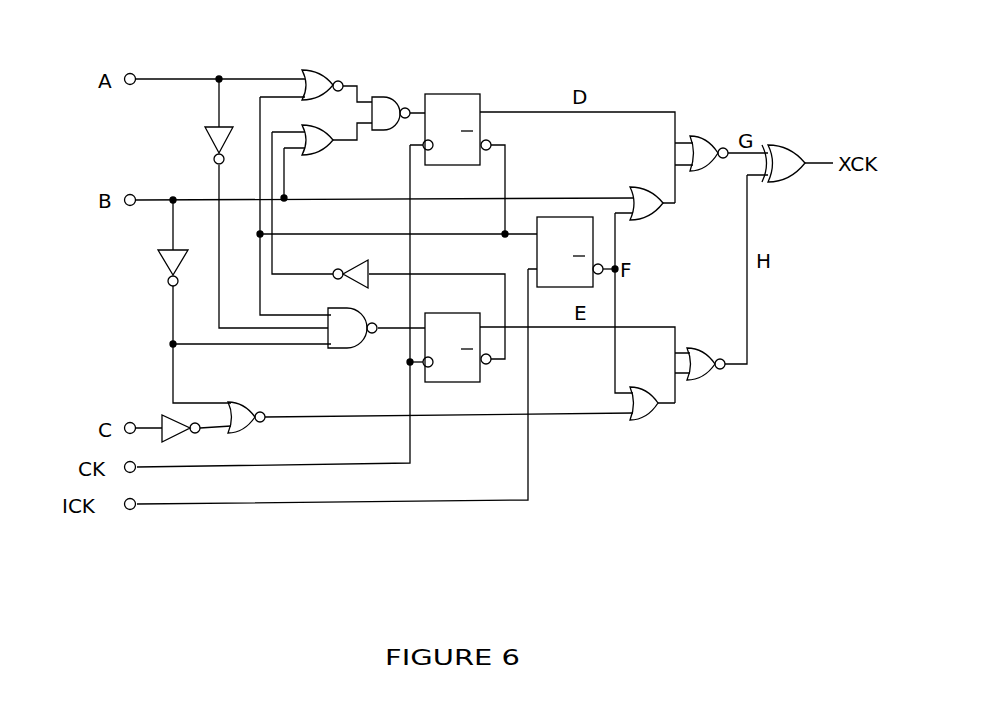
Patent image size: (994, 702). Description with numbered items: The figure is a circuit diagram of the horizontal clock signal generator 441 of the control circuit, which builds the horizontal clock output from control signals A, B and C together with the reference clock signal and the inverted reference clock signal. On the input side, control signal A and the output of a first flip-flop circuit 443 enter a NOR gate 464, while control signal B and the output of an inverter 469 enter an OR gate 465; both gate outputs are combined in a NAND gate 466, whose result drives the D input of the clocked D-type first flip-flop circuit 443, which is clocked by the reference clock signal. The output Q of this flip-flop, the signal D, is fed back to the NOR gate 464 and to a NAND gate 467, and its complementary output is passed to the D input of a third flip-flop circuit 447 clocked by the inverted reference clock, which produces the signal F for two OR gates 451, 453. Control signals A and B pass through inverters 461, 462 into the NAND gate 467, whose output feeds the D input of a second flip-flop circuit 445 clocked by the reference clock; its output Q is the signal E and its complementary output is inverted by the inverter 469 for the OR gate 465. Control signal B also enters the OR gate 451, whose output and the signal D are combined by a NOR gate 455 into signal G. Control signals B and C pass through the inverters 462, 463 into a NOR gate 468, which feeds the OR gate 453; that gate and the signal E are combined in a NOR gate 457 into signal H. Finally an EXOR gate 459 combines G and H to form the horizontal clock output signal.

The horizontal clock signal generator 441 is at (565, 57).
The first flip-flop circuit 443 is at (450, 94).
The second flip-flop circuit 445 is at (443, 393).
The third flip-flop circuit 447 is at (557, 300).
The OR gate 451 is at (643, 182).
The OR gate 453 is at (643, 420).
The NOR gate 455 is at (705, 137).
The NOR gate 457 is at (702, 377).
The EXOR gate 459 is at (788, 147).
The inverter 461 is at (202, 137).
The inverter 462 is at (160, 265).
The inverter 463 is at (163, 417).
The NOR gate 464 is at (317, 67).
The OR gate 465 is at (320, 143).
The NAND gate 466 is at (387, 92).
The NAND gate 467 is at (347, 333).
The NOR gate 468 is at (240, 420).
The inverter 469 is at (360, 285).